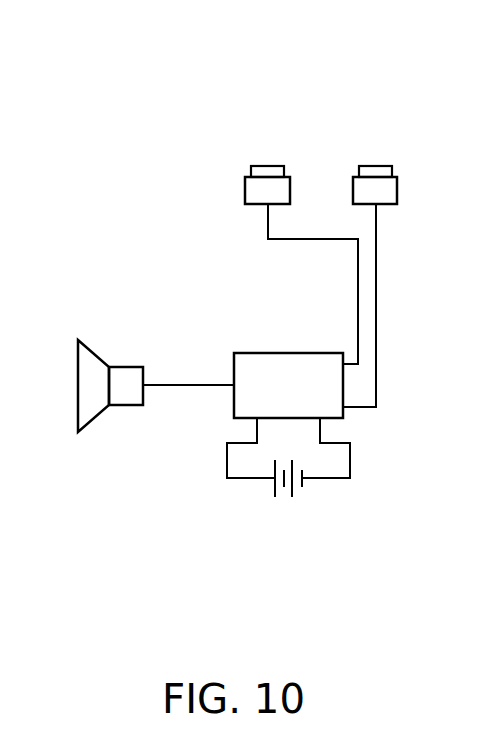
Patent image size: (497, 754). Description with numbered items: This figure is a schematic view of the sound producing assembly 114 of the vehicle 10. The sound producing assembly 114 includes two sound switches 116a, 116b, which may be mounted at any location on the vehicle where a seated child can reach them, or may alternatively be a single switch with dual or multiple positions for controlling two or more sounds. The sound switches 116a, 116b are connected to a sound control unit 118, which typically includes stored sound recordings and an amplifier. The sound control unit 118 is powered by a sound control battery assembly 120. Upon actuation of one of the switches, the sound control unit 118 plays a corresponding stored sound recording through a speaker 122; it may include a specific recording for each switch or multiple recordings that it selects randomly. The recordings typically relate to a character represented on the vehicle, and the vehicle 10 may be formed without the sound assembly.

The vehicle 10 is at (208, 84).
The sound producing assembly 114 is at (380, 508).
The sound switch 116a is at (268, 165).
The sound switch 116b is at (380, 165).
The sound control unit 118 is at (345, 413).
The sound control battery assembly 120 is at (282, 498).
The speaker 122 is at (78, 395).